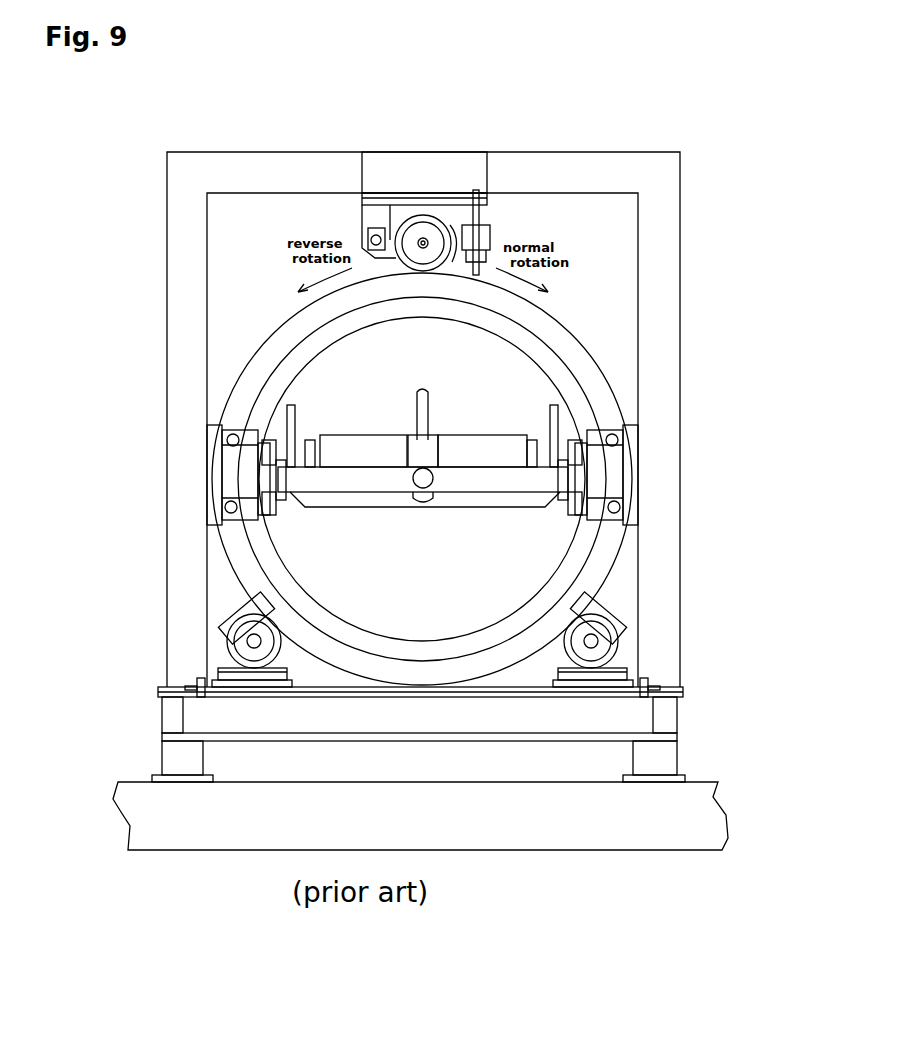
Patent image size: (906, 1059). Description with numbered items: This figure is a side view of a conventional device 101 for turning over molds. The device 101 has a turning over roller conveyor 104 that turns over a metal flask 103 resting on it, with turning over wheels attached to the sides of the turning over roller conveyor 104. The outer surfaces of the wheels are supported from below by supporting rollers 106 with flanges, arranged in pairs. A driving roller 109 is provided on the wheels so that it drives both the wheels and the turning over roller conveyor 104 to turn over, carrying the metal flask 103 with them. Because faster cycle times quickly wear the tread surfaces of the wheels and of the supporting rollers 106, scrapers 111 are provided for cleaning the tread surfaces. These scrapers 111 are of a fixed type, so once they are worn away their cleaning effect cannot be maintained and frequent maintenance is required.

The device for turning over molds 101 is at (528, 124).
The metal flask 103 is at (488, 484).
The turning over roller conveyor 104 is at (217, 428).
The supporting rollers with flanges 106 is at (240, 655).
The driving roller 109 is at (408, 213).
The scrapers 111 is at (222, 628).